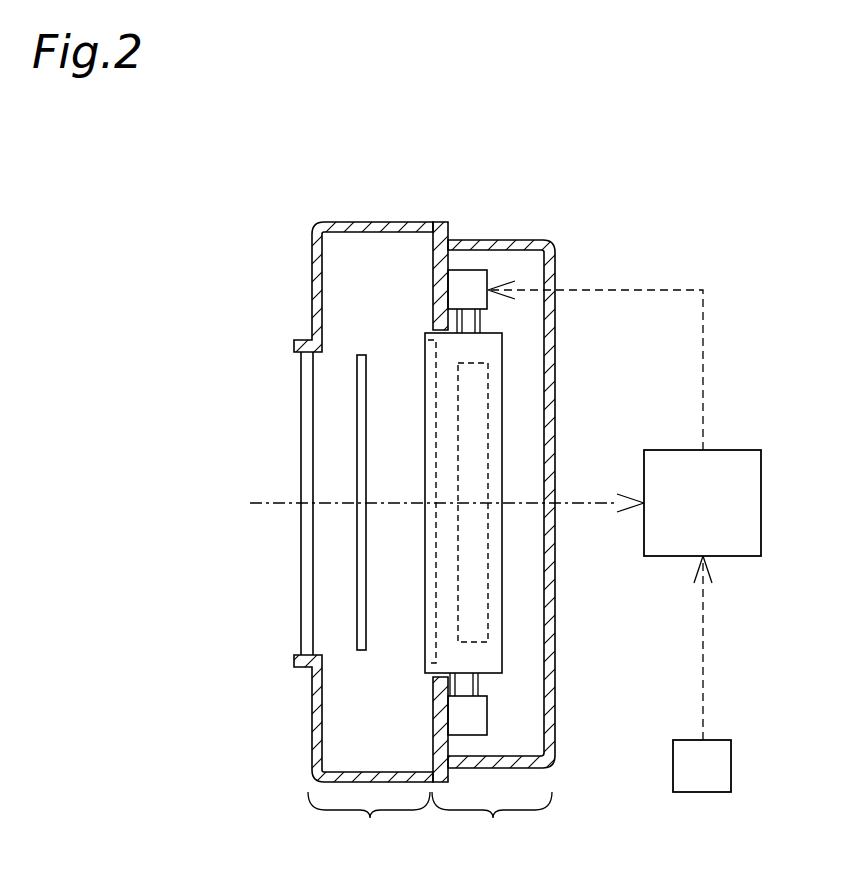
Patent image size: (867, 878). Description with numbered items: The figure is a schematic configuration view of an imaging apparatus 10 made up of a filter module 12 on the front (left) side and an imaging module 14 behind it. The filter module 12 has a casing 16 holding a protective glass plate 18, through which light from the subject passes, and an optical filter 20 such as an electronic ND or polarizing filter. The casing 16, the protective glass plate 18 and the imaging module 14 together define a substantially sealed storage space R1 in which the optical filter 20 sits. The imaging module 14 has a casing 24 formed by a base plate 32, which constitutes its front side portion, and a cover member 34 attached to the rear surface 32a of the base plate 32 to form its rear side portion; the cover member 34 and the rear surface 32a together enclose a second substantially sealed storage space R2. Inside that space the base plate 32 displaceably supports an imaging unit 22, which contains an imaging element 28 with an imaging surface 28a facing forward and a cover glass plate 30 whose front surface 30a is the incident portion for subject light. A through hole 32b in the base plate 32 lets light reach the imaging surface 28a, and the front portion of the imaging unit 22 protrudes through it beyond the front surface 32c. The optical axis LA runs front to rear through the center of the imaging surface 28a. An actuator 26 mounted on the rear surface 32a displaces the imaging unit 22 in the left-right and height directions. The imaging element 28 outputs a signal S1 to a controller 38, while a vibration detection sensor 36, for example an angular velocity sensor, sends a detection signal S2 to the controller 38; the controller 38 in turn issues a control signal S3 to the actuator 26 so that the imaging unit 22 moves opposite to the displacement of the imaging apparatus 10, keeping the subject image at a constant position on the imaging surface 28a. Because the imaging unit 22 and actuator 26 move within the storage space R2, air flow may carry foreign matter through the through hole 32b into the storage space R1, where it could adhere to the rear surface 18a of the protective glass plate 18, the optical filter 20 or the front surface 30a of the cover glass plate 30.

The imaging apparatus 10 is at (215, 247).
The filter module 12 is at (369, 824).
The imaging module 14 is at (492, 824).
The casing 16 is at (312, 257).
The protective glass plate 18 is at (301, 383).
The rear surface of the protective glass plate 18a is at (313, 444).
The optical filter 20 is at (361, 355).
The imaging unit 22 is at (497, 587).
The casing 24 is at (530, 214).
The actuator 26 is at (467, 270).
The imaging element 28 is at (473, 433).
The imaging surface 28a is at (458, 553).
The cover glass plate 30 is at (425, 657).
The front surface of the cover glass plate 30a is at (425, 400).
The base plate 32 is at (437, 222).
The rear surface of the base plate 32a is at (448, 746).
The through hole 32b is at (432, 678).
The front surface of the base plate 32c is at (432, 744).
The cover member 34 is at (550, 244).
The vibration detection sensor 36 is at (715, 778).
The controller 38 is at (722, 517).
The storage space R1 is at (360, 274).
The storage space R2 is at (537, 337).
The optical axis LA is at (256, 506).
The signal S1 is at (610, 488).
The detection signal S2 is at (715, 648).
The control signal S3 is at (614, 365).